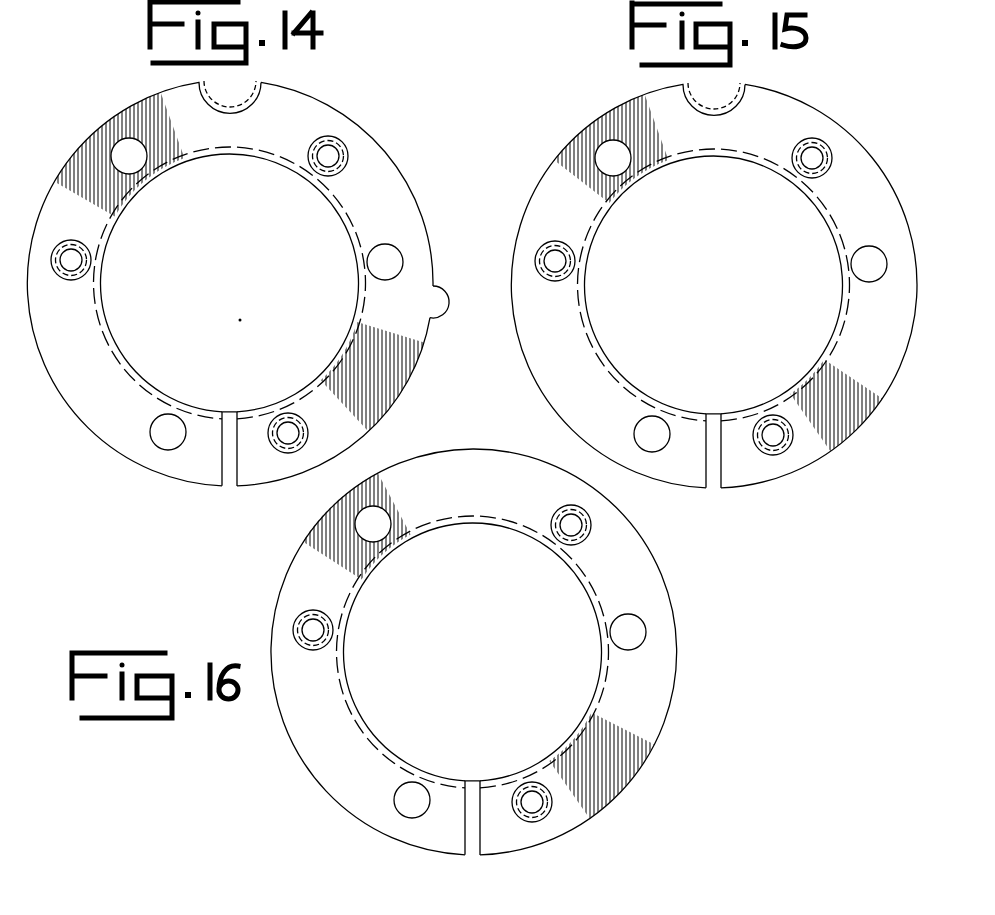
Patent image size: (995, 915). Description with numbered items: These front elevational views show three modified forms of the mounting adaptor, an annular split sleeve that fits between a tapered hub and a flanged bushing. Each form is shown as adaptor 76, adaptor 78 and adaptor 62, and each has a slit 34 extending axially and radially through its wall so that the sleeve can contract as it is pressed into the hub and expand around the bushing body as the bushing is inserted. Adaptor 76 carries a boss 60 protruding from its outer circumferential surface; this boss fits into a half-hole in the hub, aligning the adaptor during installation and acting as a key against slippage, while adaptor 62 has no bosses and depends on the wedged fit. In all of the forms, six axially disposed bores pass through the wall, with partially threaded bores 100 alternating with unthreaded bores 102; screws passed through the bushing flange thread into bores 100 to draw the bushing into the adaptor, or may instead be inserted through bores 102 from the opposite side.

In FIG. 14, the slit 34 is at (229, 482).
In FIG. 15, the slit 34 is at (708, 478).
In FIG. 16, the slit 34 is at (466, 790).
In FIG. 14, the boss 60 is at (440, 318).
In FIG. 16, the adaptor 62 is at (668, 700).
In FIG. 14, the adaptor 76 is at (395, 400).
In FIG. 15, the adaptor 78 is at (820, 460).
In FIG. 14, the threaded bores 100 is at (303, 421).
In FIG. 15, the threaded bores 100 is at (555, 282).
In FIG. 16, the threaded bores 100 is at (559, 511).
In FIG. 14, the unthreaded bores 102 is at (146, 147).
In FIG. 15, the unthreaded bores 102 is at (868, 252).
In FIG. 16, the unthreaded bores 102 is at (397, 793).